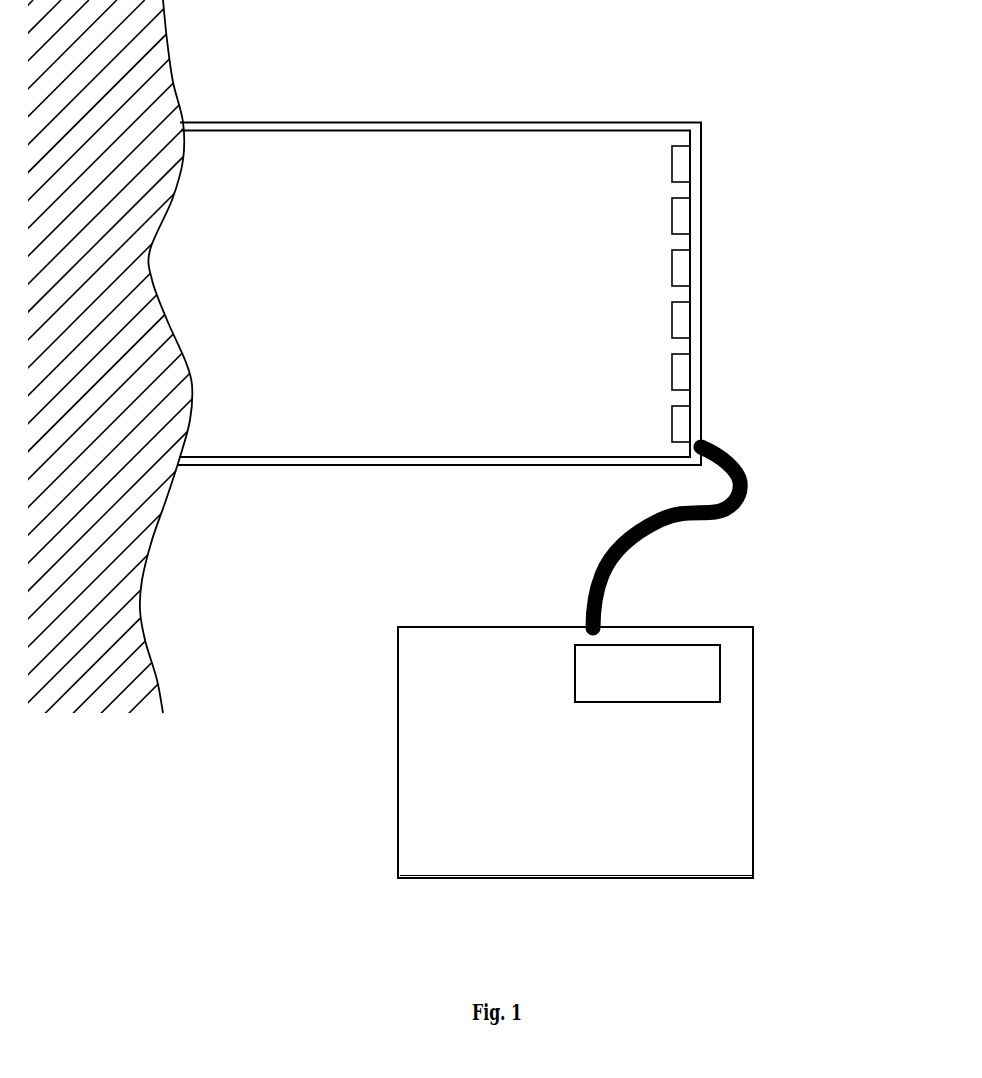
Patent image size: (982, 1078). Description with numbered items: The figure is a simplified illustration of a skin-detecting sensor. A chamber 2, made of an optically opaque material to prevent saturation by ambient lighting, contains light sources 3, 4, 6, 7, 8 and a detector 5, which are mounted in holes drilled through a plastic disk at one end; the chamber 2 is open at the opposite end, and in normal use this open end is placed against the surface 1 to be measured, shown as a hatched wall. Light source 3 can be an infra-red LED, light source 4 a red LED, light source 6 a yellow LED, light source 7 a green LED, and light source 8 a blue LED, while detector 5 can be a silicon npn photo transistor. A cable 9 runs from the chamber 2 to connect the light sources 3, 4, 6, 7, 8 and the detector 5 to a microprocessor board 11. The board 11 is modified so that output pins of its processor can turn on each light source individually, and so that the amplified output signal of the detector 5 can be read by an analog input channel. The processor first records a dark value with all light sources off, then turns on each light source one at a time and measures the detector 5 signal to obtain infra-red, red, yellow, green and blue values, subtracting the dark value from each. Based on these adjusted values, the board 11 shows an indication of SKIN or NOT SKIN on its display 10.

The surface 1 is at (163, 82).
The chamber 2 is at (482, 127).
The light source 3 is at (680, 163).
The light source 4 is at (680, 215).
The detector 5 is at (680, 268).
The light source 6 is at (680, 320).
The light source 7 is at (680, 372).
The light source 8 is at (680, 424).
The cable 9 is at (748, 472).
The display 10 is at (705, 680).
The microprocessor board 11 is at (735, 813).